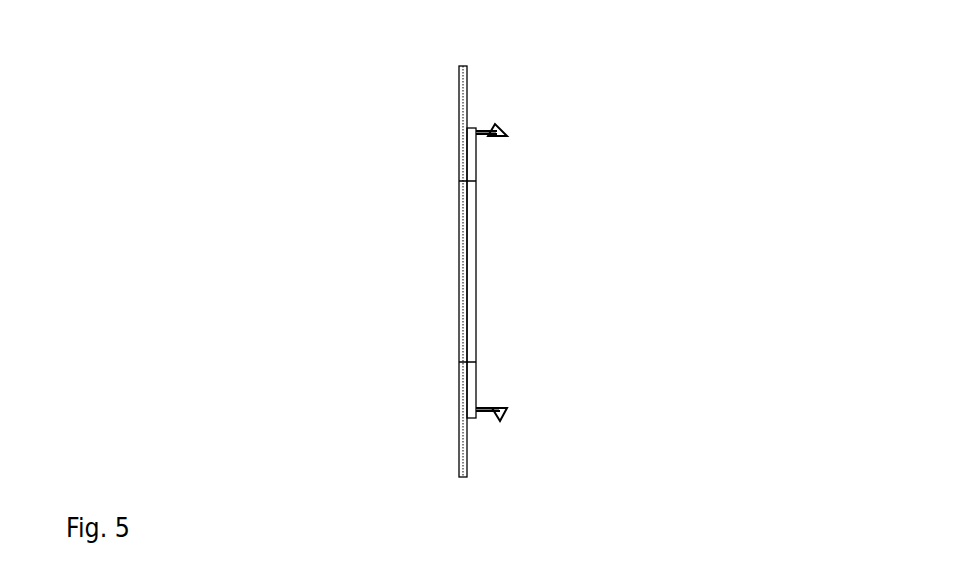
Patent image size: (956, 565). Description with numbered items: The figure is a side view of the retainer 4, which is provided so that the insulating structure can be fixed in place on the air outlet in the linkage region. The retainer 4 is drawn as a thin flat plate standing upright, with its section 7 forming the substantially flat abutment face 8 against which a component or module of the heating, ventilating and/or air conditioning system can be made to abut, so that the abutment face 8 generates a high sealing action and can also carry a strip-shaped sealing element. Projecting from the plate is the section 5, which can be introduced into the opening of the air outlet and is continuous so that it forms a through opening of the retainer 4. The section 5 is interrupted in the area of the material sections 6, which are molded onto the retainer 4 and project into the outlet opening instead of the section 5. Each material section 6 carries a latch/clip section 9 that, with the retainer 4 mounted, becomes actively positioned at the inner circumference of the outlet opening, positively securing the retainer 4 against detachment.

The retainer 4 is at (405, 139).
The section 5 is at (476, 258).
The material sections 6 is at (503, 137).
The section 7 is at (460, 449).
The abutment face 8 is at (457, 301).
The latch/clip section 9 is at (496, 123).